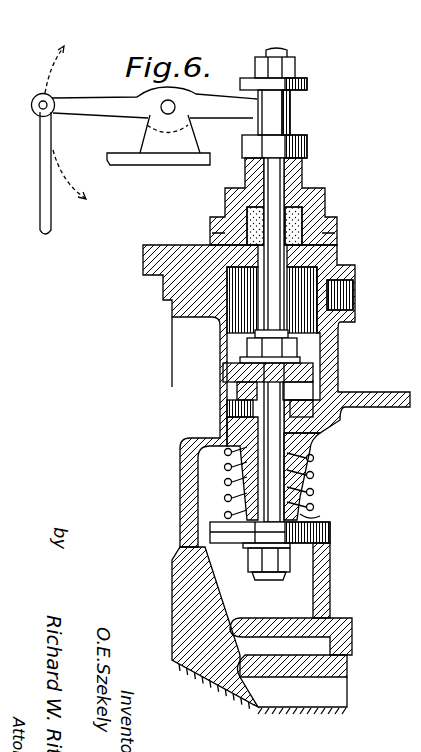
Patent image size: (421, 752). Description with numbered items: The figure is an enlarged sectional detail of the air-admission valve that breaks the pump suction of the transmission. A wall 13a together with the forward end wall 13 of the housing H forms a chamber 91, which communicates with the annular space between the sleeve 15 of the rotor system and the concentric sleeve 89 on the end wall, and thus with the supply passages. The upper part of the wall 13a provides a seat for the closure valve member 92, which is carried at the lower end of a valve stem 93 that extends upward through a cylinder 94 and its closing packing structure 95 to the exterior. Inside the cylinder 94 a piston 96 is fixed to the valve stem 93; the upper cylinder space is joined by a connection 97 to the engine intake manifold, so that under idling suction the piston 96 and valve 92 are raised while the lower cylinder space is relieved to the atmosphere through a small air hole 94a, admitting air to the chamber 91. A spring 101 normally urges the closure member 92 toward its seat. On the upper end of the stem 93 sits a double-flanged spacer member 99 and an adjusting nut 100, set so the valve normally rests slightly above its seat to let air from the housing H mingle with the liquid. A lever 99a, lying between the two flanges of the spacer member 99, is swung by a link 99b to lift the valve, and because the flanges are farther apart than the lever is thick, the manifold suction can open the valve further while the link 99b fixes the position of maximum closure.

The lever 99a is at (120, 113).
The link 99b is at (53, 222).
The nut 100 is at (295, 67).
The spacer member 99 is at (292, 102).
The closing packing structure 95 is at (318, 218).
The housing H is at (187, 250).
The connection 97 is at (355, 282).
The cylinder 94 is at (313, 321).
The piston 96 is at (303, 370).
The air hole 94a is at (230, 405).
The valve stem 93 is at (328, 438).
The spring 101 is at (316, 471).
The closure valve member 92 is at (330, 527).
The chamber 91 is at (295, 584).
The wall 13a is at (333, 552).
The sleeve 89 is at (263, 623).
The forward end wall 13 is at (192, 552).
The sleeve 15 is at (263, 665).